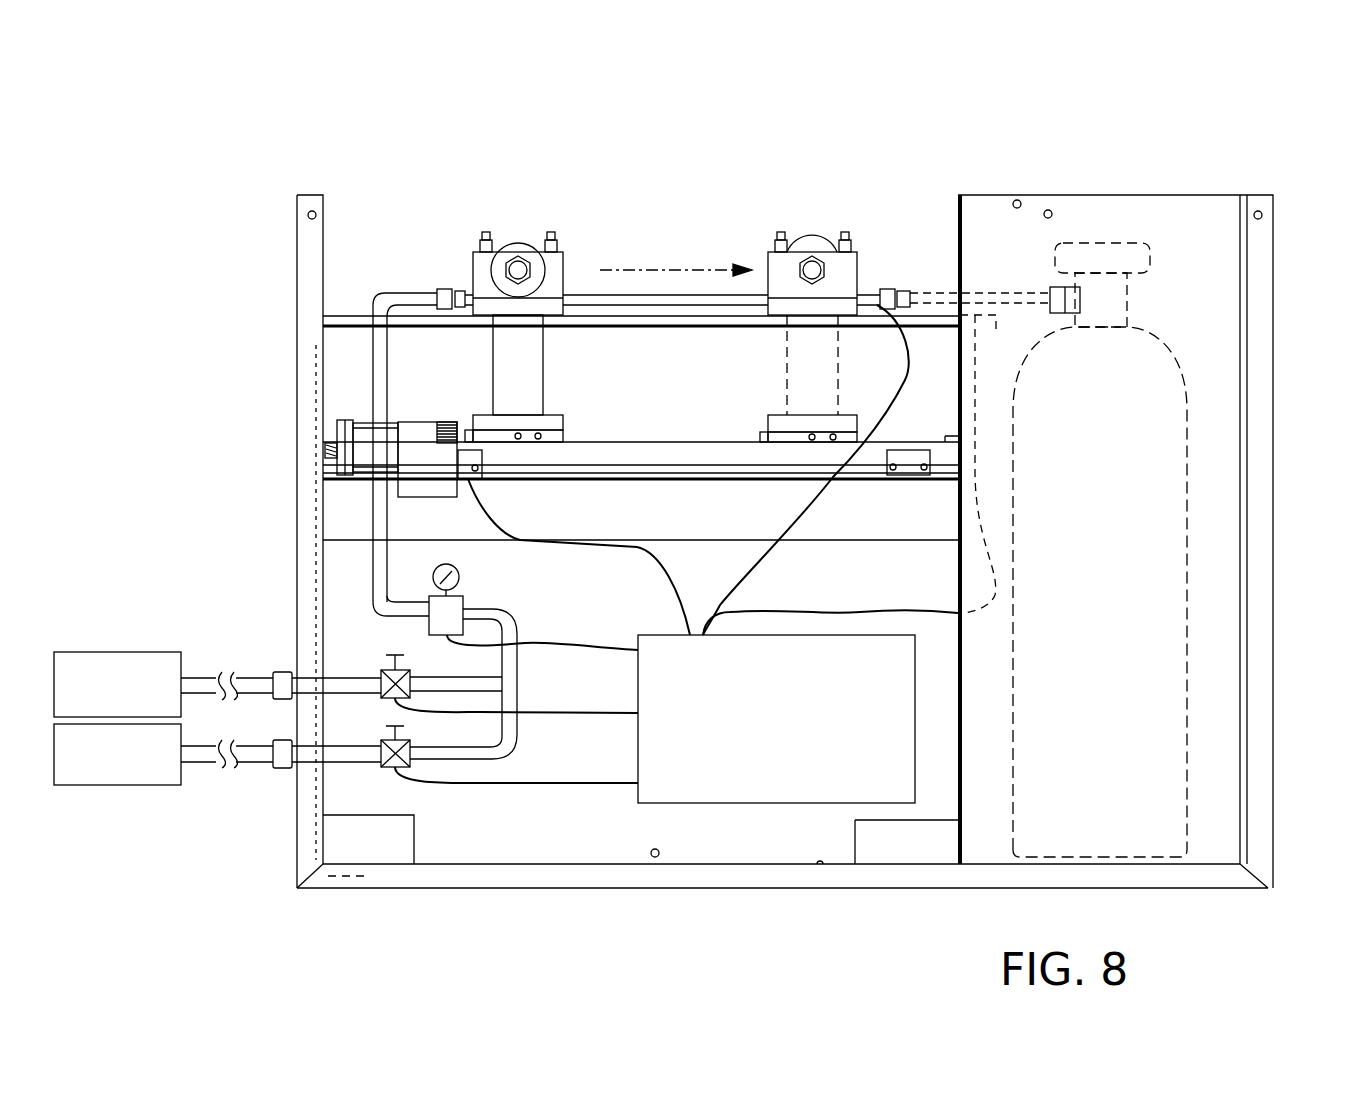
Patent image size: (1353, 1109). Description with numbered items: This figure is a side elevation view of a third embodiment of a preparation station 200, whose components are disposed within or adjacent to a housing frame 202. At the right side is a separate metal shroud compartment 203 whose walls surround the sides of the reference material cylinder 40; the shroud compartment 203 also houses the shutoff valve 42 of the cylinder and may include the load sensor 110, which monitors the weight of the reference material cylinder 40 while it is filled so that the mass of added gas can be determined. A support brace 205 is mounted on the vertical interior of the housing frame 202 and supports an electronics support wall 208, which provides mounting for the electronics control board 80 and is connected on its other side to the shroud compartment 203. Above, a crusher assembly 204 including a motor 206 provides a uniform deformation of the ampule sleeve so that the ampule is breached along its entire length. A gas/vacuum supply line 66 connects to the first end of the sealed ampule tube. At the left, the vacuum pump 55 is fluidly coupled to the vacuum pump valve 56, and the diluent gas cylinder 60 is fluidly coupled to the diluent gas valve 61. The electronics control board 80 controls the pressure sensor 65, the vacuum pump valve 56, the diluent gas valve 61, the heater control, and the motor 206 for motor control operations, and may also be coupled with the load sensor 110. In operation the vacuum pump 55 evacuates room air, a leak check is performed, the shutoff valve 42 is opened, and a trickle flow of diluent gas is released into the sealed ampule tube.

The preparation station 200 is at (236, 150).
The housing frame 202 is at (297, 935).
The shroud compartment 203 is at (1143, 195).
The crusher assembly 204 is at (462, 225).
The support brace 205 is at (315, 430).
The motor 206 is at (420, 472).
The electronics support wall 208 is at (545, 855).
The gas/vacuum supply line 66 is at (382, 363).
The pressure sensor 65 is at (429, 605).
The vacuum pump 55 is at (120, 650).
The vacuum pump valve 56 is at (381, 677).
The diluent gas cylinder 60 is at (128, 785).
The diluent gas valve 61 is at (381, 760).
The electronics control board 80 is at (742, 795).
The load sensor 110 is at (975, 315).
The reference material cylinder 40 is at (1150, 448).
The shutoff valve 42 is at (1088, 243).